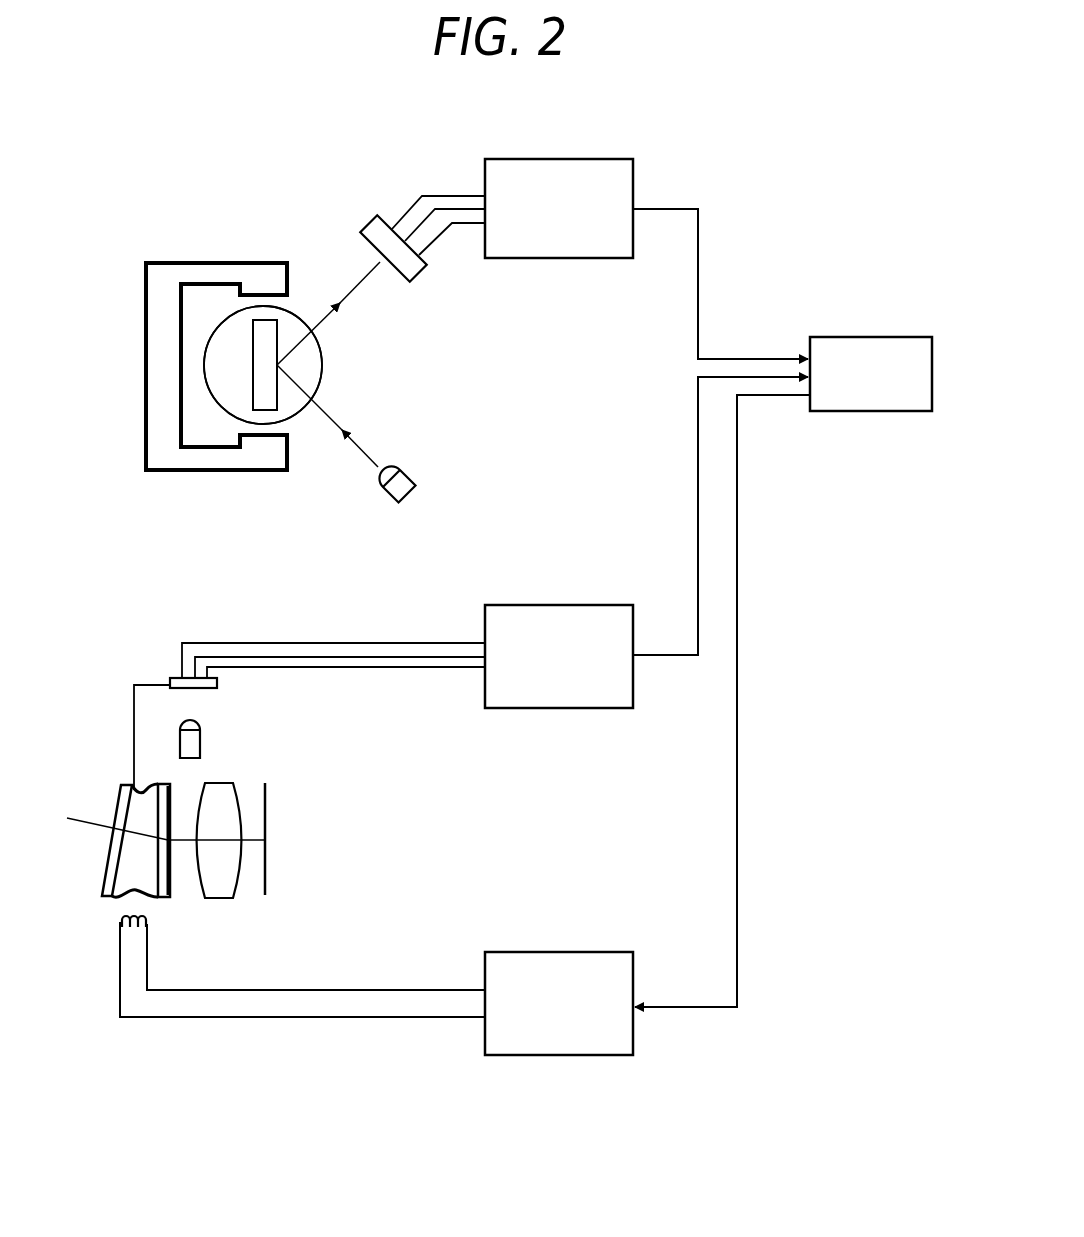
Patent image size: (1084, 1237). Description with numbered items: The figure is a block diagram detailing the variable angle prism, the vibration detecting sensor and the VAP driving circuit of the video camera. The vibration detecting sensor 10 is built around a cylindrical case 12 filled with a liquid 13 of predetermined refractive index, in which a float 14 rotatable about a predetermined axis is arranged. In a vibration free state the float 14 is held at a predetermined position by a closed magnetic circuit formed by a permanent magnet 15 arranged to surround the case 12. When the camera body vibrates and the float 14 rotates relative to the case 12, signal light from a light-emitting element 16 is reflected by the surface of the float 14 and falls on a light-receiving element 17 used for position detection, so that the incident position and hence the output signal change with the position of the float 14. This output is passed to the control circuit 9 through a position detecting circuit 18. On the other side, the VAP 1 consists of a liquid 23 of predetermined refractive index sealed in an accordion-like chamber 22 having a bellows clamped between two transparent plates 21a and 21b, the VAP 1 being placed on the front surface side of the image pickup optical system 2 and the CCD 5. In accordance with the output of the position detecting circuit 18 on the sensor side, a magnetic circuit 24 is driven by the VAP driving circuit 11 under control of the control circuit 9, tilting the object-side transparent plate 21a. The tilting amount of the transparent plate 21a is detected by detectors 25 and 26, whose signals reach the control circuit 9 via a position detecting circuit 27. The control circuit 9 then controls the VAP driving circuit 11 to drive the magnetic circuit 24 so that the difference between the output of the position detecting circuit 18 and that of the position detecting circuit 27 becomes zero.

The VAP 1 is at (117, 814).
The image pickup optical system 2 is at (222, 885).
The CCD 5 is at (267, 887).
The control circuit 9 is at (890, 337).
The vibration detecting sensor 10 is at (282, 257).
The VAP driving circuit 11 is at (588, 952).
The cylindrical case 12 is at (230, 410).
The liquid 13 is at (293, 400).
The float 14 is at (268, 338).
The permanent magnet 15 is at (207, 266).
The light-emitting element 16 is at (392, 486).
The light-receiving element 17 is at (372, 228).
The position detecting circuit 18 is at (598, 158).
The transparent plate 21a is at (123, 805).
The transparent plate 21b is at (175, 788).
The accordion-like chamber 22 is at (125, 897).
The liquid 23 is at (128, 872).
The magnetic circuit 24 is at (138, 958).
The detector 25 is at (196, 740).
The detector 26 is at (178, 680).
The position detecting circuit 27 is at (586, 605).